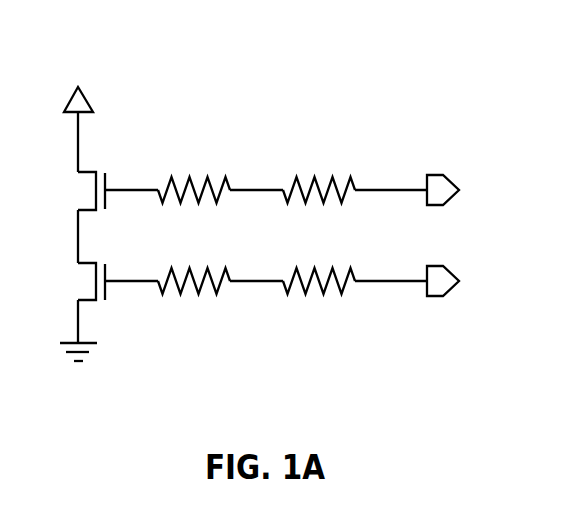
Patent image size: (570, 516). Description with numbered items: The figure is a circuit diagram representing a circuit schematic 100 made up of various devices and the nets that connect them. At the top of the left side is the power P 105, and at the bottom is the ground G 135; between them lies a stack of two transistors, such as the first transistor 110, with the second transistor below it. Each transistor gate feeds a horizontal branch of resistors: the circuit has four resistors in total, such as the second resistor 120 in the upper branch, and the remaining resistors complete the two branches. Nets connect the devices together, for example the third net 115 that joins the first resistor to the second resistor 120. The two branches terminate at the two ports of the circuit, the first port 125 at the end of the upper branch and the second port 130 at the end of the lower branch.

The circuit schematic 100 is at (407, 50).
The power P 105 is at (86, 99).
The transistor M1 110 is at (88, 172).
The net N3 115 is at (272, 190).
The resistor R2 120 is at (350, 177).
The port P1 125 is at (443, 176).
The port P2 130 is at (443, 266).
The ground G 135 is at (89, 352).